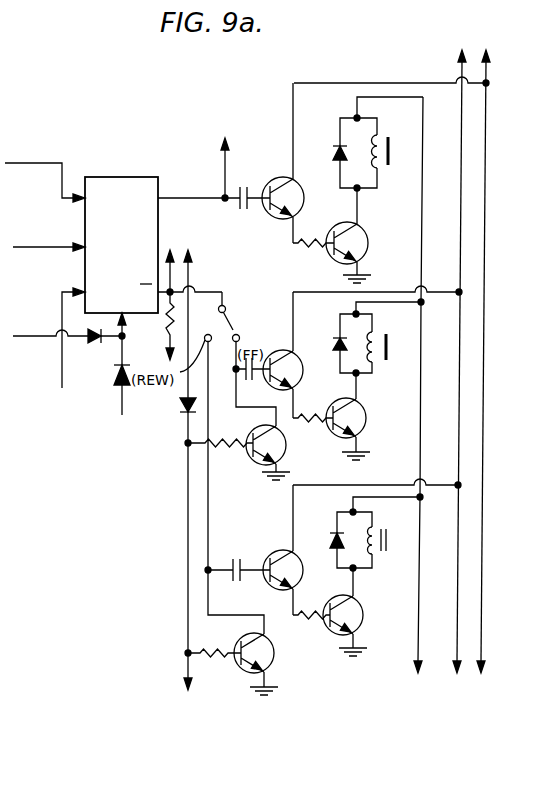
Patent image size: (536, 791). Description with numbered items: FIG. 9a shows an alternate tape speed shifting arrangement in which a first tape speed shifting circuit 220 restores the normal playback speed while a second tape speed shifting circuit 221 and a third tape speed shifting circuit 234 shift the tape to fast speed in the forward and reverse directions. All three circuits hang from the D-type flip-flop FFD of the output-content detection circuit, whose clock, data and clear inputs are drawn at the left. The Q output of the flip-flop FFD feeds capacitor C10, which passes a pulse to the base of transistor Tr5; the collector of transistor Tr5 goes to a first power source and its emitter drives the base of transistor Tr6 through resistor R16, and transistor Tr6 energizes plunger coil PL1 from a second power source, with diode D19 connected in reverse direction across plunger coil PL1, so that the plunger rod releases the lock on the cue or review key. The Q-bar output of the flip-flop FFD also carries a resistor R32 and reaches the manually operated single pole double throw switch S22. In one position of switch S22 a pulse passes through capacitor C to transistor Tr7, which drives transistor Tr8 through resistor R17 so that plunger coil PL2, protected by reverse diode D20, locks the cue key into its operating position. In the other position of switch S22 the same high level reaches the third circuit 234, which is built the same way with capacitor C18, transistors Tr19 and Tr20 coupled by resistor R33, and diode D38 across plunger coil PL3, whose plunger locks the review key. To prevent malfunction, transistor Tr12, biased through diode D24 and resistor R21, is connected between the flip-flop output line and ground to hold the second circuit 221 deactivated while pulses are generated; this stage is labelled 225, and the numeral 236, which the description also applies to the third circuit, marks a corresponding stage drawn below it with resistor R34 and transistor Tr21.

The D-type flip-flop FFD is at (144, 177).
The capacitor C10 is at (244, 185).
The transistor Tr5 is at (270, 226).
The transistor Tr6 is at (365, 252).
The resistor R16 is at (312, 248).
The diode D19 is at (335, 149).
The plunger coil PL1 is at (381, 144).
The first tape speed shifting circuit 220 is at (360, 189).
The second tape speed shifting circuit 221 is at (349, 364).
The resistor R32 is at (167, 320).
The diode D24 is at (182, 398).
The single pole double throw switch S22 is at (232, 317).
The transistor Tr7 is at (296, 350).
The capacitor C is at (253, 382).
The resistor R17 is at (313, 409).
The transistor Tr8 is at (364, 442).
The diode D20 is at (324, 334).
The plunger coil PL2 is at (380, 339).
The resistor R21 is at (220, 428).
The transistor Tr12 is at (304, 467).
The transistor switching circuit 225 is at (262, 452).
The third tape speed shifting circuit 234 is at (333, 572).
The capacitor C18 is at (237, 583).
The transistor Tr19 is at (296, 579).
The resistor R33 is at (309, 621).
The transistor Tr20 is at (355, 632).
The diode D38 is at (321, 524).
The plunger PL3 is at (378, 534).
The resistor R34 is at (214, 643).
The transistor Tr21 is at (273, 669).
The third tape speed shifting circuit 236 is at (255, 671).